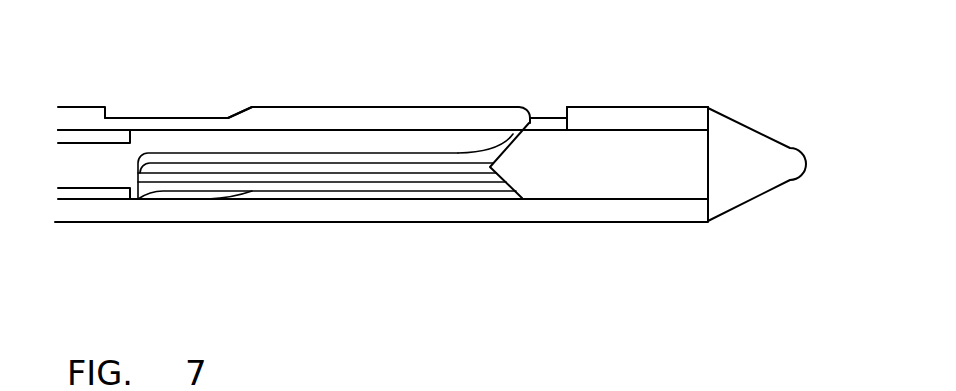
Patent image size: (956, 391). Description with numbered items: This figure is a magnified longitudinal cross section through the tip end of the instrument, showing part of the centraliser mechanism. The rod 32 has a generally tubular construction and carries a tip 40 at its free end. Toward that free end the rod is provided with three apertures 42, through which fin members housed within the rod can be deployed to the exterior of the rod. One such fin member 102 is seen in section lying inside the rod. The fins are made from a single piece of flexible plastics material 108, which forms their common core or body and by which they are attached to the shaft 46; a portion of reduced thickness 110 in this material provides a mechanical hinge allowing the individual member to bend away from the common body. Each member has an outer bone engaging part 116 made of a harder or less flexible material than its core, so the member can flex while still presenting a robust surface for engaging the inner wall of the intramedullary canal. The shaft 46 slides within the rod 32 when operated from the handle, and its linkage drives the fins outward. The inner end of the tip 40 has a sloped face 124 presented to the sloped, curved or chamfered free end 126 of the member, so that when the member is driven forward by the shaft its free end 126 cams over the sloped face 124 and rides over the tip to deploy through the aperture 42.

The rod 32 is at (662, 118).
The tip 40 is at (773, 167).
The apertures 42 is at (182, 112).
The shaft 46 is at (117, 137).
The fin member 102 is at (347, 118).
The single piece of flexible material 108 is at (100, 167).
The outer bone engaging part 116 is at (427, 108).
The sloped face 124 is at (524, 152).
The free end of member 126 is at (488, 132).
The portion of reduced thickness 110 is at (462, 390).